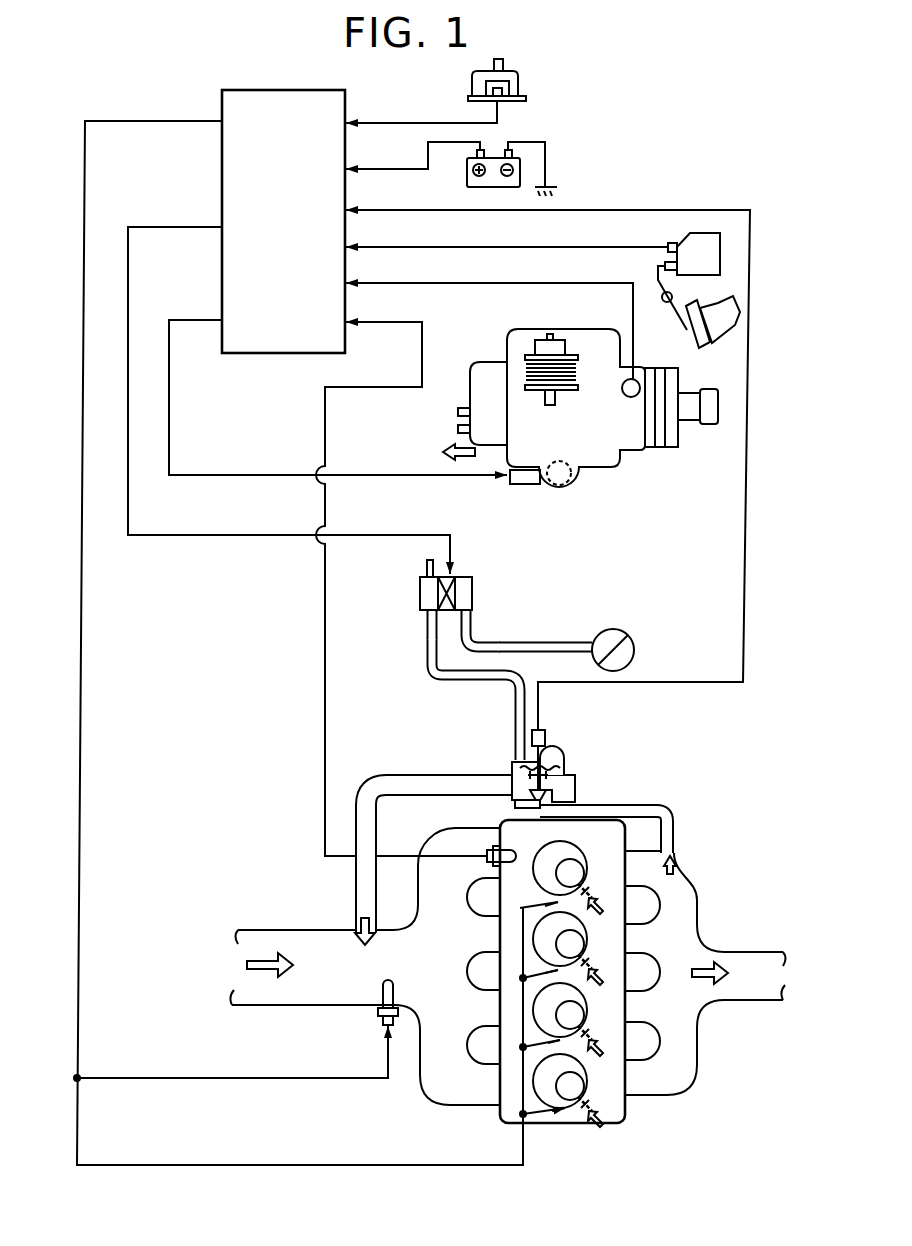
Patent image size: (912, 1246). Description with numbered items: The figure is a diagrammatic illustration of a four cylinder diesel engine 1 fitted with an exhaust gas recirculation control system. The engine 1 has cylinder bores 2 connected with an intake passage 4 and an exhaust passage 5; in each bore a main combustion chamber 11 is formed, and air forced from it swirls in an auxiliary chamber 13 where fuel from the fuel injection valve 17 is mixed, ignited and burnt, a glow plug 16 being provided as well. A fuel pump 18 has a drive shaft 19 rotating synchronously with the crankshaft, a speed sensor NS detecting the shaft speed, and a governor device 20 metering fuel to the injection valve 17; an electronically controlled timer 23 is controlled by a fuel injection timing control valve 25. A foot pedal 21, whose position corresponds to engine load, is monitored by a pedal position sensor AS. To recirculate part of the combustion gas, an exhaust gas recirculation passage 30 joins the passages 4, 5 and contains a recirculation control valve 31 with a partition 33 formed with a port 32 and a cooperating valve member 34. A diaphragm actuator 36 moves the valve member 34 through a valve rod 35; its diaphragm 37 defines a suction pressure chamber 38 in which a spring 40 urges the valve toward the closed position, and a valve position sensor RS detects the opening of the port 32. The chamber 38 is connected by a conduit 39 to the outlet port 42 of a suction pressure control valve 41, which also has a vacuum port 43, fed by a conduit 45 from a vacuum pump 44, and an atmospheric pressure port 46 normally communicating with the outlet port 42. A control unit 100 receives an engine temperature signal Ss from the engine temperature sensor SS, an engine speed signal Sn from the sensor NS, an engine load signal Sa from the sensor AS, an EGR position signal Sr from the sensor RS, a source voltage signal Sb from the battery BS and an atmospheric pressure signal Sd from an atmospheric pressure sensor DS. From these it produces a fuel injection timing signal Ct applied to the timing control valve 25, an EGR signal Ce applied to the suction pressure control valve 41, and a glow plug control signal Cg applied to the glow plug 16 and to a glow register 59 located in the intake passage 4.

The control unit 100 is at (292, 354).
The diesel engine 1 is at (624, 1129).
The cylinder bores 2 is at (540, 845).
The intake passage 4 is at (340, 987).
The exhaust passage 5 is at (767, 991).
The main combustion chamber 11 is at (555, 884).
The auxiliary chamber 13 is at (585, 852).
The glow plug 16 is at (576, 1112).
The fuel injection valve 17 is at (598, 1097).
The fuel pump 18 is at (614, 474).
The drive shaft 19 is at (690, 422).
The governor device 20 is at (532, 390).
The foot pedal 21 is at (690, 335).
The electronically controlled timer 23 is at (554, 498).
The fuel injection timing control valve 25 is at (522, 486).
The exhaust gas recirculation passage 30 is at (392, 770).
The recirculation control valve 31 is at (601, 759).
The port 32 is at (518, 803).
The partition 33 is at (577, 796).
The valve member 34 is at (548, 786).
The valve rod 35 is at (560, 765).
The diaphragm actuator 36 is at (570, 748).
The diaphragm 37 is at (515, 752).
The suction pressure chamber 38 is at (522, 752).
The conduit 39 is at (427, 672).
The spring 40 is at (546, 735).
The suction pressure control valve 41 is at (525, 562).
The outlet port 42 is at (424, 616).
The vacuum port 43 is at (470, 616).
The vacuum pump 44 is at (628, 634).
The conduit 45 is at (560, 643).
The atmospheric pressure port 46 is at (427, 565).
The glow register 59 is at (380, 1018).
The atmospheric pressure sensor DS is at (520, 77).
The battery BS is at (523, 168).
The pedal position sensor AS is at (697, 243).
The speed sensor NS is at (636, 398).
The valve position sensor RS is at (526, 690).
The engine temperature sensor SS is at (488, 858).
The glow plug control signal Cg is at (298, 627).
The EGR signal Ce is at (289, 385).
The fuel injection timing signal Ct is at (338, 383).
The atmospheric pressure signal Sd is at (421, 109).
The source voltage signal Sb is at (413, 156).
The EGR position signal Sr is at (548, 453).
The engine load signal Sa is at (507, 231).
The engine speed signal Sn is at (489, 316).
The engine temperature signal Ss is at (401, 575).